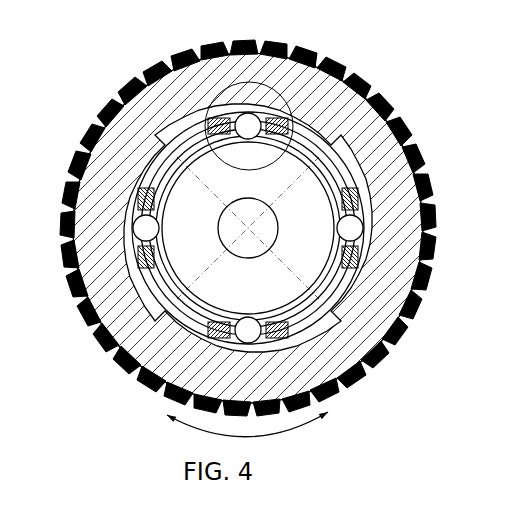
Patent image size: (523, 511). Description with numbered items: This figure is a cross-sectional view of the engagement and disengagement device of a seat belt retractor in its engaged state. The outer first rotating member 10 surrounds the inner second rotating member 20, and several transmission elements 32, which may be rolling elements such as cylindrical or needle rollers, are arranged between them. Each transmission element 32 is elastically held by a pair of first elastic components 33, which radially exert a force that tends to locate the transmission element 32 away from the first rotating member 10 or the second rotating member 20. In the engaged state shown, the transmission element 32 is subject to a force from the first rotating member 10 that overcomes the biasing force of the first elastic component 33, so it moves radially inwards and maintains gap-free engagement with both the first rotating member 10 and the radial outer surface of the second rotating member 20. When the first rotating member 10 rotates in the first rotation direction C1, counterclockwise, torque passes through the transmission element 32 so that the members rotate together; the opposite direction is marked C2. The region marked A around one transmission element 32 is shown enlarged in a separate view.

The first rotating member 10 is at (138, 163).
The second rotating member 20 is at (202, 198).
The transmission element 32 is at (153, 226).
The first elastic component 33 is at (218, 126).
The enlarged view region A is at (281, 96).
The first rotation direction C1 is at (262, 422).
The second rotation direction C2 is at (158, 417).